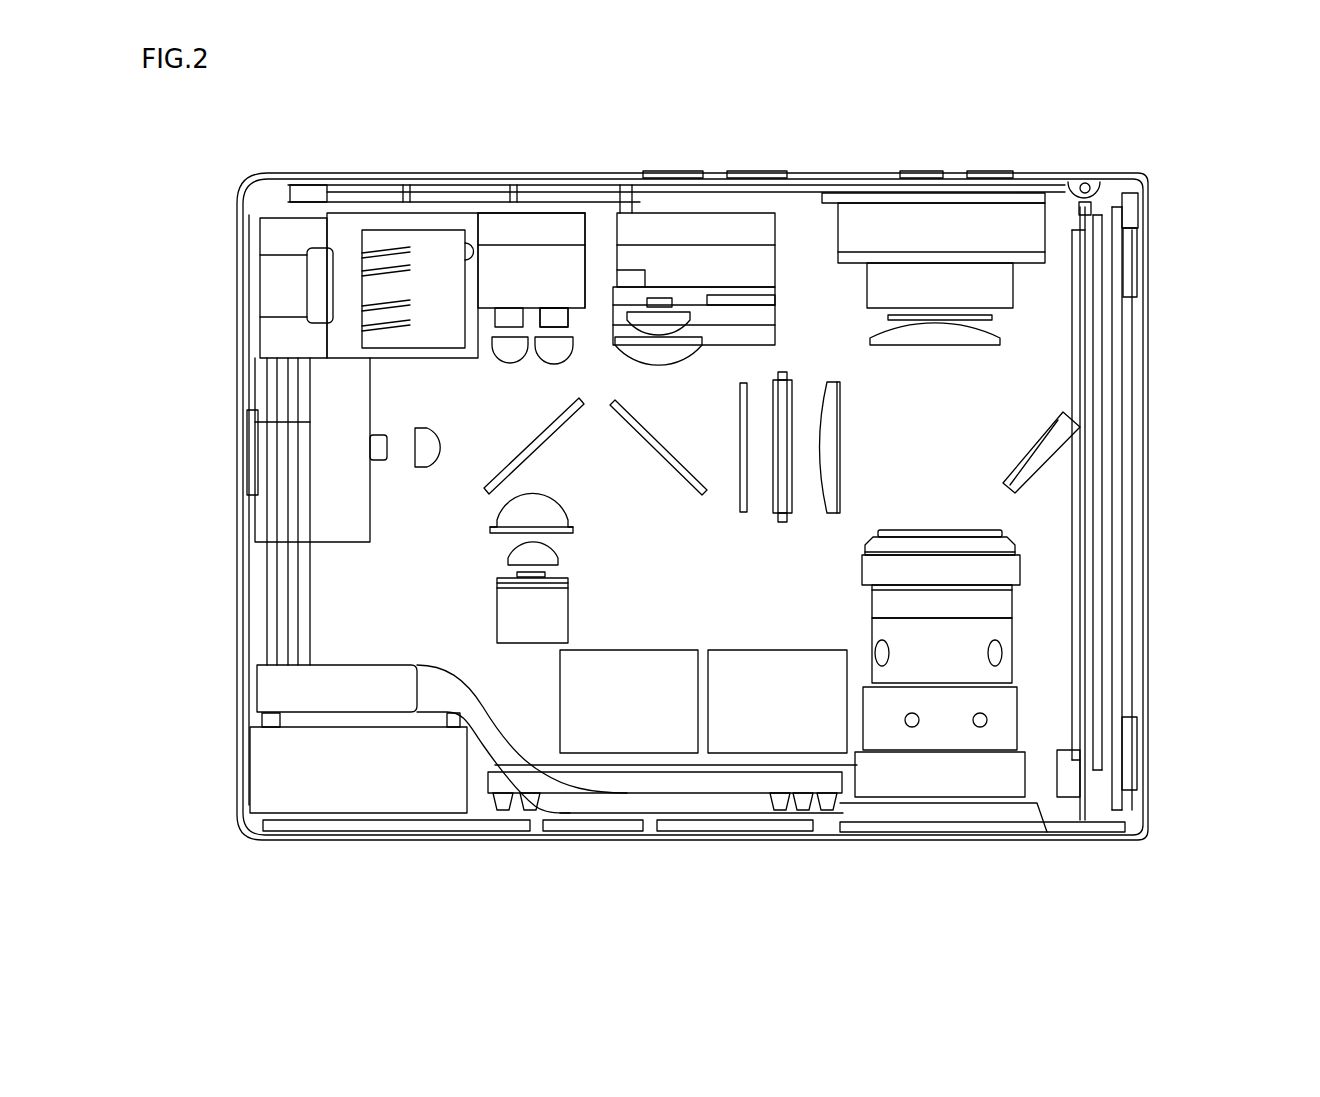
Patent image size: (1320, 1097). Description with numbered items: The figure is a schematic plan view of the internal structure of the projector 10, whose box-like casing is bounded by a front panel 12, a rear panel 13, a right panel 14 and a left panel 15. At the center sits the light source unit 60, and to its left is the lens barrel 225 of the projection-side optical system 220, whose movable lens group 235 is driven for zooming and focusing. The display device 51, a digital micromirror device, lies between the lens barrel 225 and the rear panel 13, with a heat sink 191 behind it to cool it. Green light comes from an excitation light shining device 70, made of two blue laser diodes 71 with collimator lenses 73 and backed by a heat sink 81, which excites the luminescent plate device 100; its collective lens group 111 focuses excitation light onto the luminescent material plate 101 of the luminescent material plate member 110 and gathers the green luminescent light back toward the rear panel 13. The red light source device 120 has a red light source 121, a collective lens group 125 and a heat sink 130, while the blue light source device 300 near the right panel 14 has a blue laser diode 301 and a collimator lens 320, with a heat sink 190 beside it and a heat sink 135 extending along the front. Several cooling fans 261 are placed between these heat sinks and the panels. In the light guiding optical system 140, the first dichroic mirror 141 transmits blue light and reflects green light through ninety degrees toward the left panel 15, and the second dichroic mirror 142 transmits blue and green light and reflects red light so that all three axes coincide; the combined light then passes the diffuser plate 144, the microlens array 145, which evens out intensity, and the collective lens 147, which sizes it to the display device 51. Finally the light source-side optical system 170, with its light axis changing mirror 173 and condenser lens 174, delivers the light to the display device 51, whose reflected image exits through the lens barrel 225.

The projector 10 is at (1215, 130).
The front panel 12 is at (322, 842).
The rear panel 13 is at (325, 172).
The right panel 14 is at (243, 390).
The left panel 15 is at (1143, 305).
The display device 51 is at (965, 317).
The light source unit 60 is at (697, 673).
The excitation light shining device 70 is at (422, 211).
The blue laser diode 71 is at (553, 315).
The collimator lens 73 is at (507, 353).
The heat sink 81 is at (507, 260).
The luminescent plate device 100 is at (491, 727).
The luminescent material plate 101 is at (545, 575).
The luminescent material plate member 110 is at (570, 608).
The collective lens group 111 is at (497, 543).
The red light source device 120 is at (752, 219).
The red light source 121 is at (658, 302).
The collective lens group 125 is at (700, 325).
The heat sink 130 is at (700, 262).
The heat sink 135 is at (278, 688).
The light guiding optical system 140 is at (810, 365).
The first dichroic mirror 141 is at (488, 493).
The second dichroic mirror 142 is at (652, 442).
The diffuser plate 144 is at (743, 512).
The microlens array 145 is at (785, 517).
The collective lens 147 is at (835, 422).
The light source-side optical system 170 is at (1047, 340).
The light axis changing mirror 173 is at (1043, 447).
The condenser lens 174 is at (922, 332).
The heat sink 190 is at (292, 392).
The heat sink 191 is at (987, 225).
The projection-side optical system 220 is at (978, 437).
The lens barrel 225 is at (963, 773).
The movable lens group 235 is at (1022, 613).
The cooling fan 261 is at (540, 230).
The blue light source device 300 is at (247, 482).
The blue laser diode 301 is at (378, 447).
The collimator lens 320 is at (415, 460).